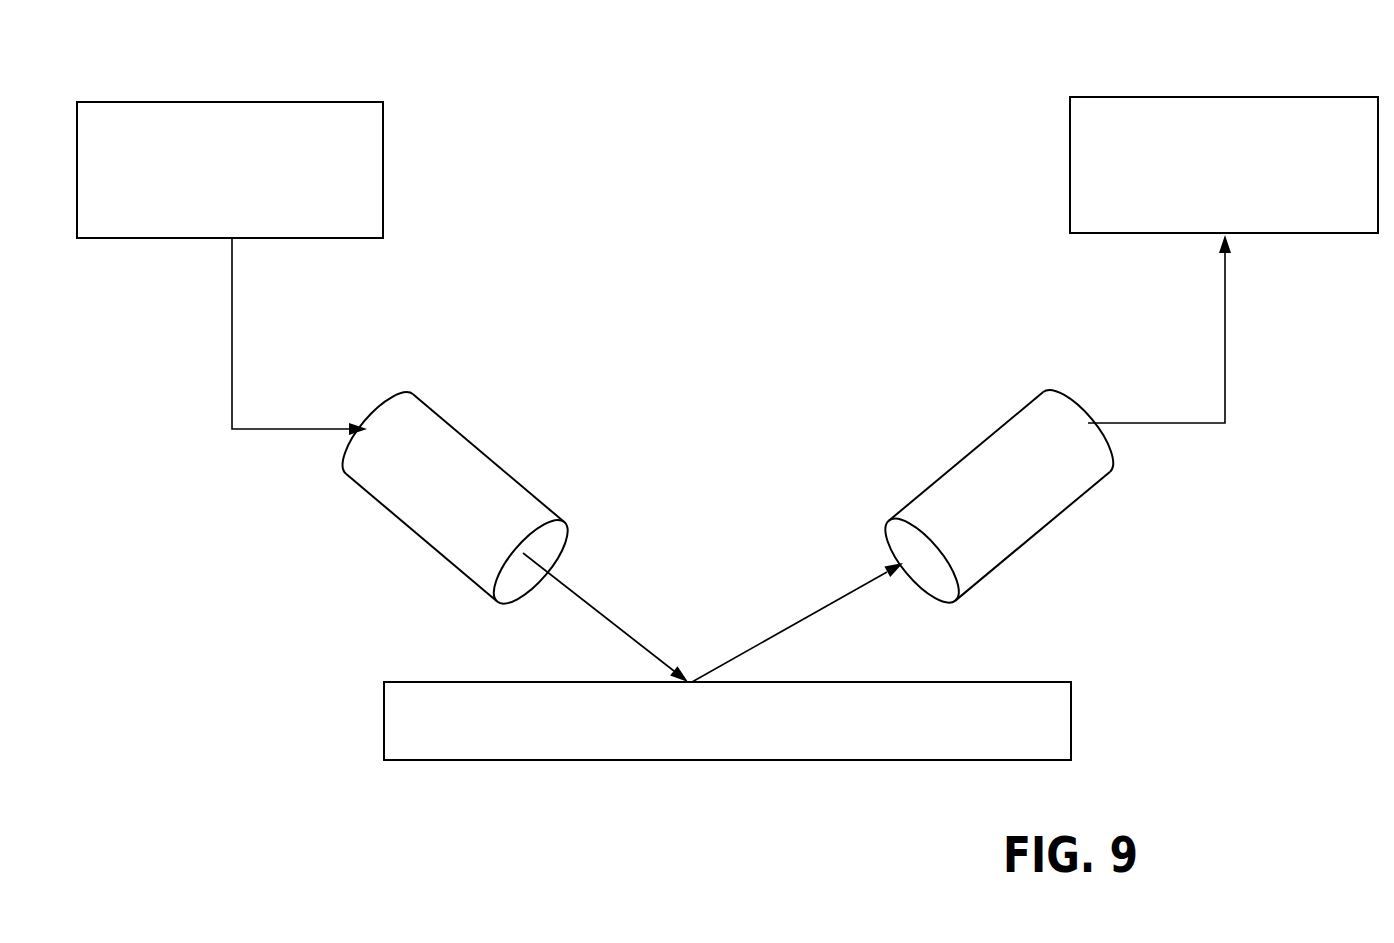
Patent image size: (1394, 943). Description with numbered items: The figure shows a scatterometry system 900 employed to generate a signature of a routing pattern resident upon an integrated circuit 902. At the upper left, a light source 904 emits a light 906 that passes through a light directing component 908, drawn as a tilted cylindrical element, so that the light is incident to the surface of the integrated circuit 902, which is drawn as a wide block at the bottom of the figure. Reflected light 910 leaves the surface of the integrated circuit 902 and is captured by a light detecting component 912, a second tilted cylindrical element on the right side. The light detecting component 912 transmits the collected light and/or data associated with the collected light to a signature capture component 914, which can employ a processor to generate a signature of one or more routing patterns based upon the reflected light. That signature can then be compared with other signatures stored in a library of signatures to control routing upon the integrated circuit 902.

The scatterometry system 900 is at (968, 28).
The integrated circuit 902 is at (1071, 721).
The light source 904 is at (383, 158).
The light 906 is at (593, 608).
The light directing component 908 is at (470, 440).
The reflected light 910 is at (833, 603).
The light detecting component 912 is at (922, 490).
The signature capture component 914 is at (1070, 177).